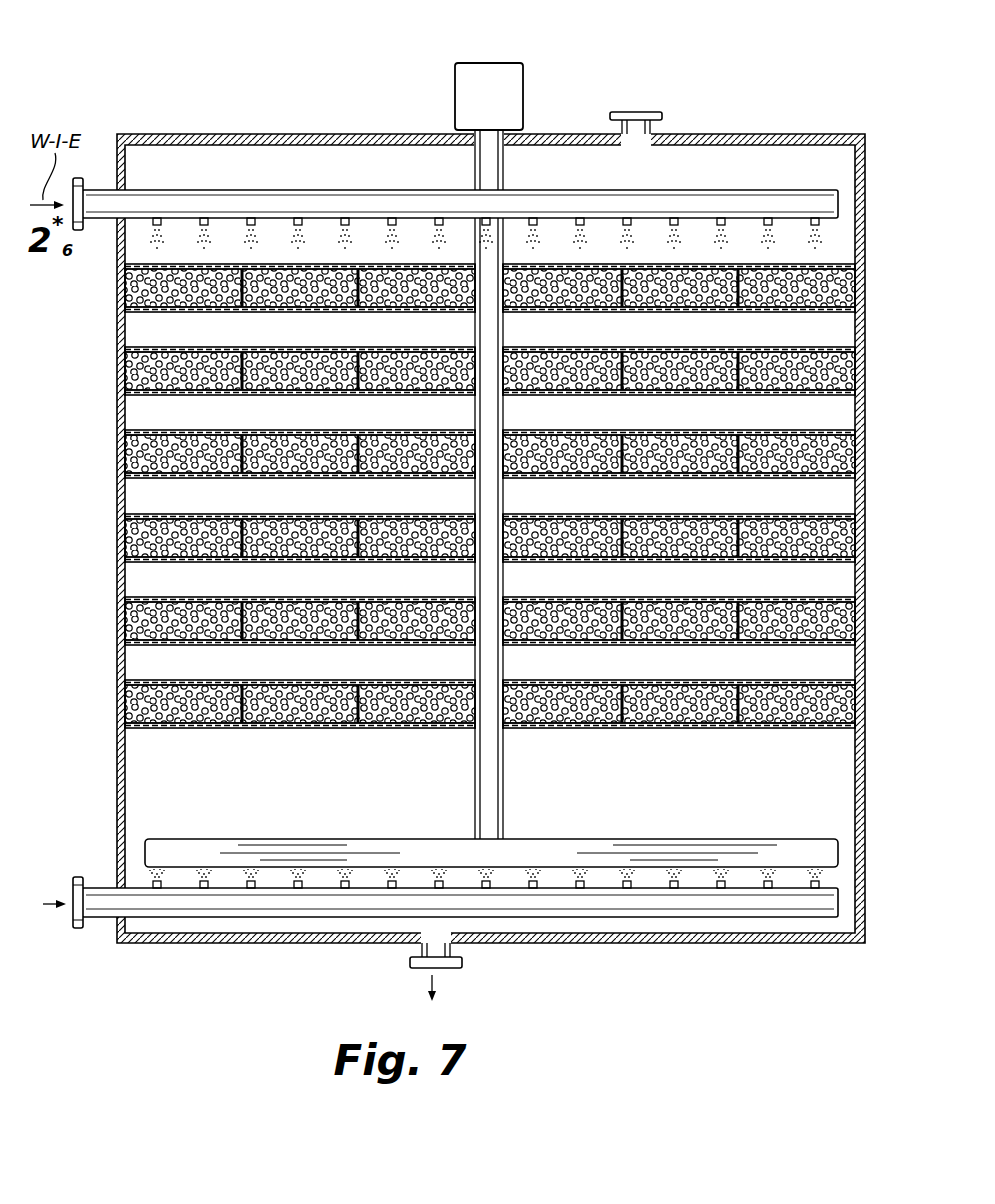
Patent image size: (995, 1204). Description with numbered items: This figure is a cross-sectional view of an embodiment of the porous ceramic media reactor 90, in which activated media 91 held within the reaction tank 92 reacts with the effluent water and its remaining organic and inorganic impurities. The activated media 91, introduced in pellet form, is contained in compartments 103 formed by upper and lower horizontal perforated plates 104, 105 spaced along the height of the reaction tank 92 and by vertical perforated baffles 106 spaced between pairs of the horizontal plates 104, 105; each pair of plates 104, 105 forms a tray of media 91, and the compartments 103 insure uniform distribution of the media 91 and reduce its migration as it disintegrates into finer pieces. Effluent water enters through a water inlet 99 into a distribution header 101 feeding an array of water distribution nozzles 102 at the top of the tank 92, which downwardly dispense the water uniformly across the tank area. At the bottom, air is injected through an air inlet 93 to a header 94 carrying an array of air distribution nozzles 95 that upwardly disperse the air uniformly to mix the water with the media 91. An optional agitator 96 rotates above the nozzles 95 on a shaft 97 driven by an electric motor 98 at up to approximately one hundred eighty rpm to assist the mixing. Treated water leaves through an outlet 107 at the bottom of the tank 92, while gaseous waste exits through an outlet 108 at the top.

The porous ceramic media reactor 90 is at (455, 473).
The activated media 91 is at (160, 290).
The reaction tank 92 is at (117, 790).
The air inlet 93 is at (78, 930).
The header 94 is at (270, 912).
The air distribution nozzles 95 is at (296, 882).
The agitator 96 is at (735, 848).
The shaft 97 is at (503, 782).
The electric motor 98 is at (521, 62).
The water inlet 99 is at (78, 232).
The distribution header 101 is at (373, 196).
The water distribution nozzles 102 is at (243, 225).
The compartments 103 is at (683, 313).
The upper horizontal perforated plate 104 is at (153, 350).
The lower horizontal perforated plate 105 is at (165, 395).
The vertical perforated baffles 106 is at (250, 383).
The outlet 107 is at (462, 967).
The outlet 108 is at (661, 112).